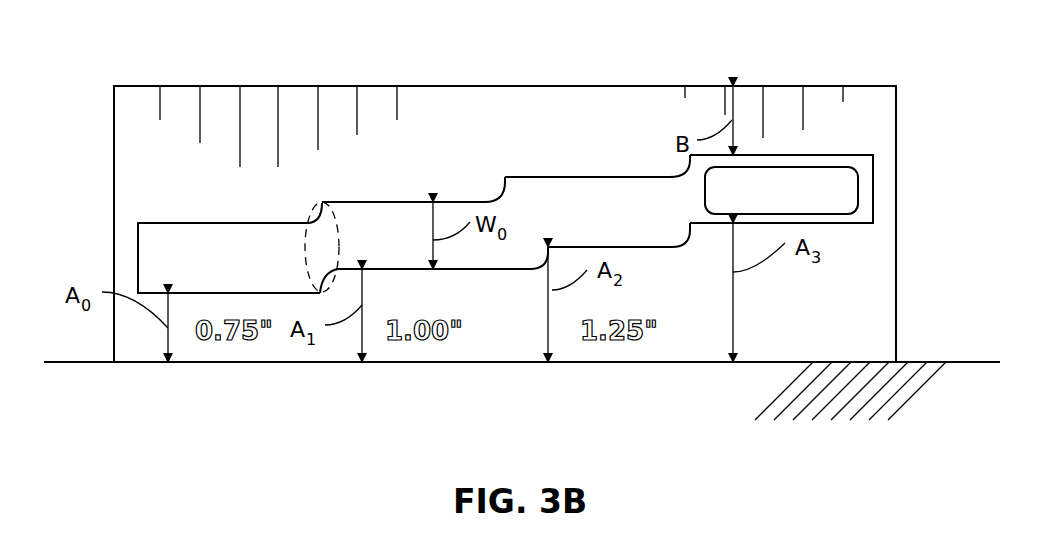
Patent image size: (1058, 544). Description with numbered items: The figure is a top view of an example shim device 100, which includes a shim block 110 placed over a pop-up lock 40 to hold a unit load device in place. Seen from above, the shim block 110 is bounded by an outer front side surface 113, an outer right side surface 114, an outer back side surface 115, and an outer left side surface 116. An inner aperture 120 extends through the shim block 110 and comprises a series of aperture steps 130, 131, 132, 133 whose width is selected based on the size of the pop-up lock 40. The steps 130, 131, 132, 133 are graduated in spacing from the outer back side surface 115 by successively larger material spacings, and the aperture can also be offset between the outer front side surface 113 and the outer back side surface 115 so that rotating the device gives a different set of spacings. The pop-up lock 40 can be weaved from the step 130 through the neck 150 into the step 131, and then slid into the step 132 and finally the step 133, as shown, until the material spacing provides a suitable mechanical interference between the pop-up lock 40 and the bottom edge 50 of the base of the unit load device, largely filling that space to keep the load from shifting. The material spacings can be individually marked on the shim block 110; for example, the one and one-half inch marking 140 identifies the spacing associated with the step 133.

The shim device 100 is at (845, 31).
The shim block 110 is at (655, 100).
The outer front side surface 113 is at (232, 85).
The outer right side surface 114 is at (896, 123).
The outer back side surface 115 is at (268, 363).
The outer left side surface 116 is at (114, 118).
The inner aperture 120 is at (153, 269).
The aperture step 130 is at (195, 236).
The aperture step 131 is at (379, 213).
The aperture step 132 is at (578, 191).
The aperture step 133 is at (789, 158).
The 1.50 inch marking 140 is at (842, 322).
The neck 150 is at (322, 215).
The pop-up lock 40 is at (796, 203).
The bottom edge 50 is at (902, 362).